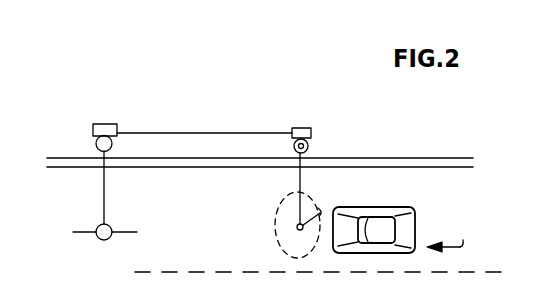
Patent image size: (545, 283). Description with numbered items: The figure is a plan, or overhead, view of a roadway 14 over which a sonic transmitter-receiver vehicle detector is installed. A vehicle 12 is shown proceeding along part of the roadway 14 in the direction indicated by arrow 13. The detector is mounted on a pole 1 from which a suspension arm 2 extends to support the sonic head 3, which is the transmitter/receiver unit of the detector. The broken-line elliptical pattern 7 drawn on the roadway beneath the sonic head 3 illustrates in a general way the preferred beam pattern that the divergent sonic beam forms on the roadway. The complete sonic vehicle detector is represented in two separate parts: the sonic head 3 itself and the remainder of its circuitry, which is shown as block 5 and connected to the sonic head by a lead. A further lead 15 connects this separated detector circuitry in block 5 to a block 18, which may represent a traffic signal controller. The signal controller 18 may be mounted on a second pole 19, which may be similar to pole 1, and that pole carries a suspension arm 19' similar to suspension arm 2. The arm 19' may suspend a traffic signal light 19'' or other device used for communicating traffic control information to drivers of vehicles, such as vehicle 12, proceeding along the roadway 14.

The pole 1 is at (308, 147).
The suspension arm 2 is at (299, 183).
The sonic head 3 is at (321, 210).
The block 5 is at (308, 127).
The broken line elliptical pattern 7 is at (277, 213).
The vehicle 12 is at (395, 207).
The arrow 13 is at (452, 234).
The roadway 14 is at (217, 248).
The lead 15 is at (232, 113).
The block 18 is at (108, 123).
The pole 19 is at (76, 140).
The suspension arm 19' is at (77, 188).
The traffic signal light 19'' is at (96, 242).